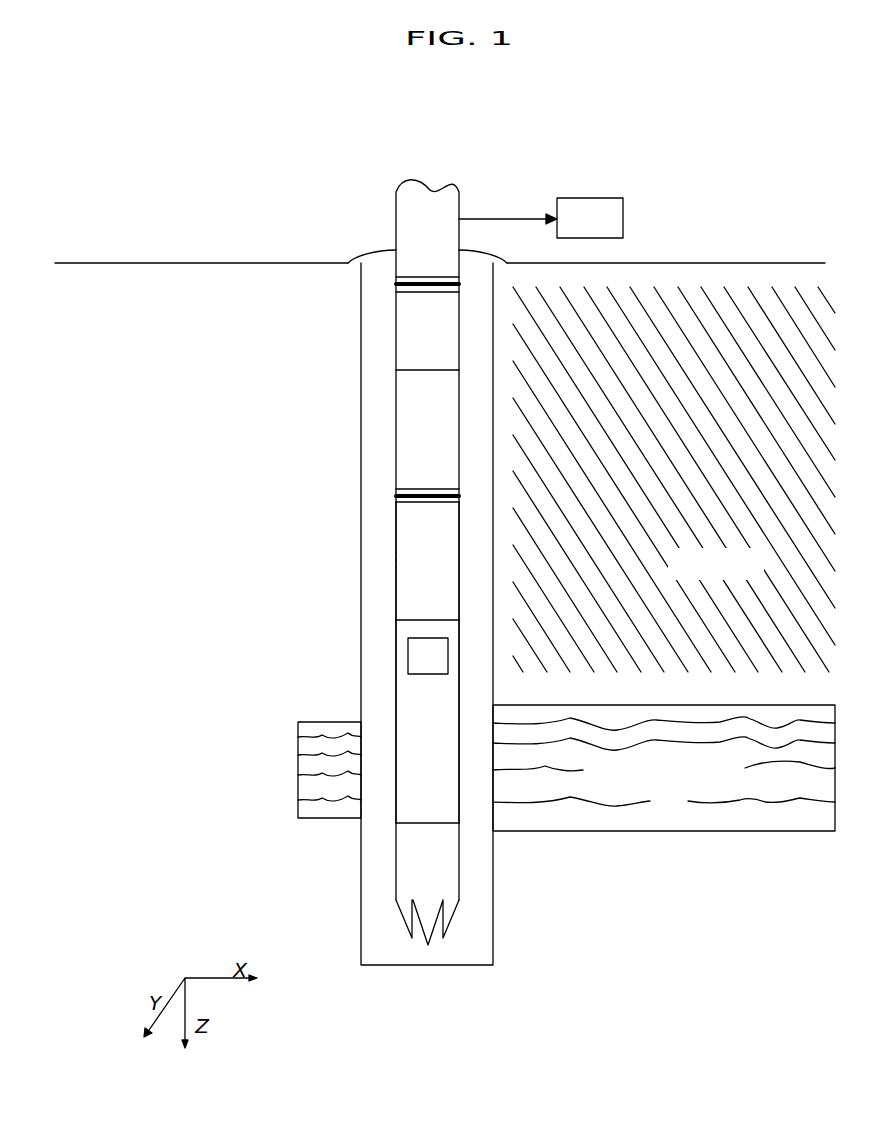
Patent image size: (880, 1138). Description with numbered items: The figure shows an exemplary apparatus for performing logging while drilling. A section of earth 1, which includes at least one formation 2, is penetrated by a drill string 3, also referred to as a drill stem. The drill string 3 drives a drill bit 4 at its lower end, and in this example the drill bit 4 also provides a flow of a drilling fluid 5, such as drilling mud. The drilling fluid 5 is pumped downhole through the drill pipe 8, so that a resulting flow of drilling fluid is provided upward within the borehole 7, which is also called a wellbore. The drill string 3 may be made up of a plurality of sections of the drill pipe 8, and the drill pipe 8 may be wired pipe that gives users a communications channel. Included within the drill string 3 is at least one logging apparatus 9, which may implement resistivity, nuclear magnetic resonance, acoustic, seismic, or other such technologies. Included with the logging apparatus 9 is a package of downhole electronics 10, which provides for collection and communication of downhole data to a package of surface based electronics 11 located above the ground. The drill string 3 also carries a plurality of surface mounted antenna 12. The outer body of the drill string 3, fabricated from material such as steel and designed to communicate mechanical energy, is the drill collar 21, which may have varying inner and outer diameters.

The earth 1 is at (758, 573).
The formation 2 is at (660, 817).
The drill string 3 is at (396, 218).
The drill bit 4 is at (407, 912).
The drilling fluid 5 is at (373, 252).
The borehole 7 is at (361, 347).
The drill pipe 8 is at (418, 578).
The logging apparatus 9 is at (407, 683).
The downhole electronics 10 is at (415, 650).
The surface based electronics 11 is at (613, 212).
The surface mounted antenna 12 is at (427, 285).
The drill collar 21 is at (418, 535).